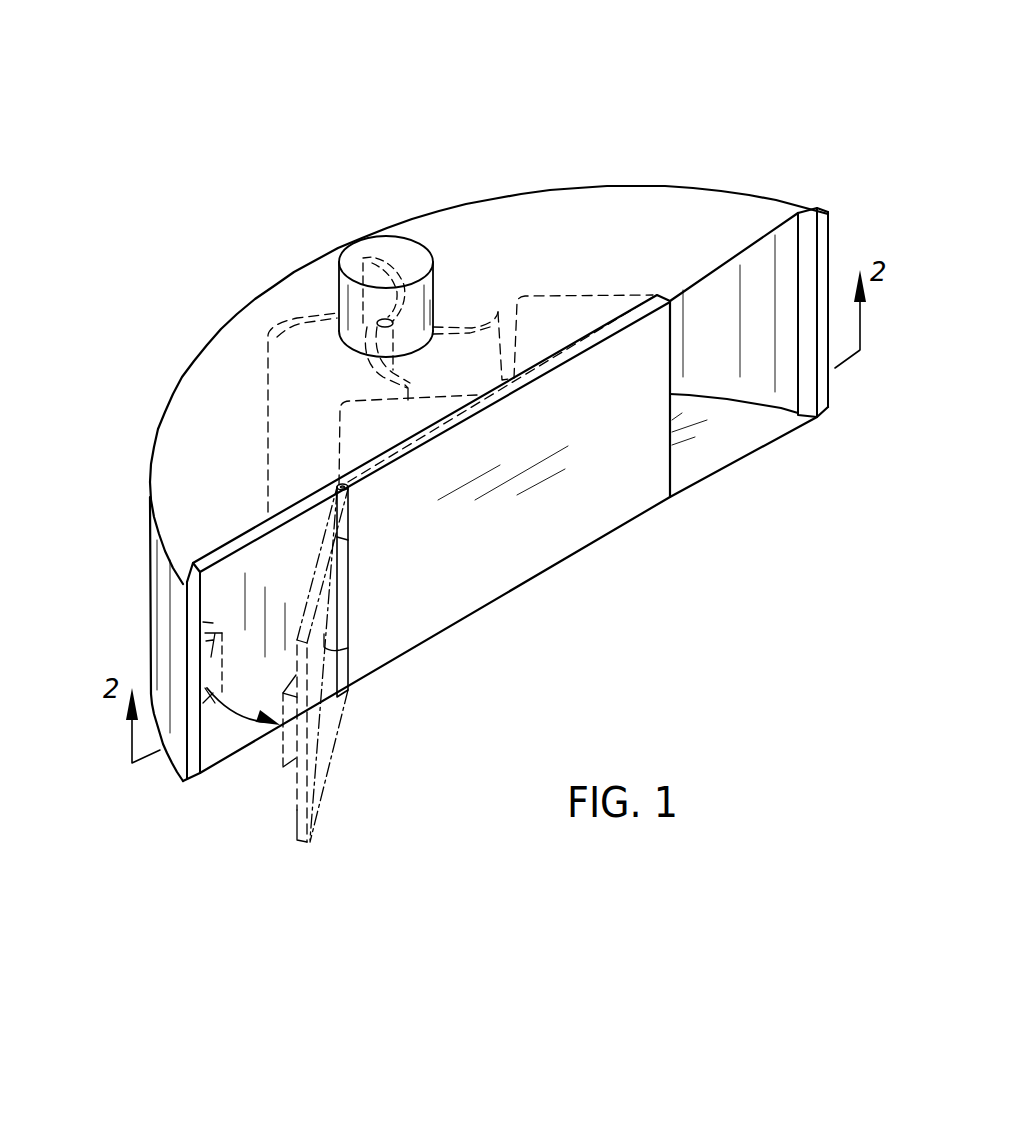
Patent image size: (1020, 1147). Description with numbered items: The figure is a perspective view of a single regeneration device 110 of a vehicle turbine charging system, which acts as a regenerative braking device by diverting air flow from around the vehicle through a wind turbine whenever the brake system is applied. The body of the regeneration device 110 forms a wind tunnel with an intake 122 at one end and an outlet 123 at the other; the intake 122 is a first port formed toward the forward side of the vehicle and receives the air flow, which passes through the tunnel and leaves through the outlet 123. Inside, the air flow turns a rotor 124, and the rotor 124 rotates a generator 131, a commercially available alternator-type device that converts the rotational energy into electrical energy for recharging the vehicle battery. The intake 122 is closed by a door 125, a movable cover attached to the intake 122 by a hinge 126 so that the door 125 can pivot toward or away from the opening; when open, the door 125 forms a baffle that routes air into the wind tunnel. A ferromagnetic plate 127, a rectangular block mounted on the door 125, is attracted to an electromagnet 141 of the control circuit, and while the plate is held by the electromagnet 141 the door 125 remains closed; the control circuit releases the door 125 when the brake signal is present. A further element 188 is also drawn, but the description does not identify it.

The regeneration device 110 is at (171, 66).
The intake 122 is at (213, 737).
The outlet 123 is at (727, 432).
The rotor 124 is at (467, 347).
The door 125 is at (320, 728).
The hinge 126 is at (343, 567).
The ferromagnetic plate 127 is at (293, 762).
The generator 131 is at (405, 253).
The electromagnet 141 is at (215, 633).
The clip 188 is at (324, 634).